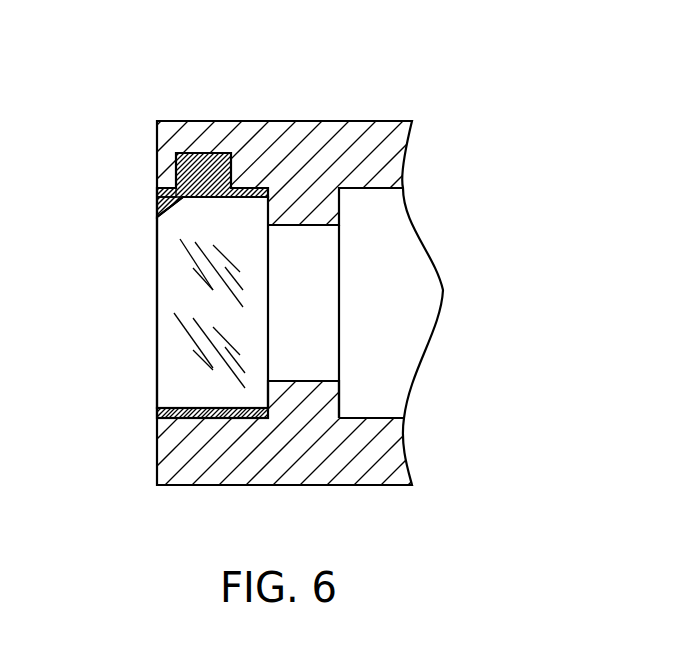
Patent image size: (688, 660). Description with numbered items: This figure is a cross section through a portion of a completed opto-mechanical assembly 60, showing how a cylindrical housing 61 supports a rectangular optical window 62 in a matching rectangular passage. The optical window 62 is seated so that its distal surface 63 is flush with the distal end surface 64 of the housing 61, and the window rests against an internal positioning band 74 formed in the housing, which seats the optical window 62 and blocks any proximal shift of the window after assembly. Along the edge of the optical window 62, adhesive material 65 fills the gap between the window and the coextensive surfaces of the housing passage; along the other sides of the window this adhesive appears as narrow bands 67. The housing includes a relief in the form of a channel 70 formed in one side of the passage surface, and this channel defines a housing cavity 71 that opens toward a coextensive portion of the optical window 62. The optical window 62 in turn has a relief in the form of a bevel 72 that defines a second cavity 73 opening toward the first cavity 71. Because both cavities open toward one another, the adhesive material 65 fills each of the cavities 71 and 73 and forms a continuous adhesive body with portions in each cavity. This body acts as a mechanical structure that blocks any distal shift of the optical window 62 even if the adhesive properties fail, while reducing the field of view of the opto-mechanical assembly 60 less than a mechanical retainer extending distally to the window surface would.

The opto-mechanical assembly 60 is at (378, 105).
The housing 61 is at (395, 160).
The optical window 62 is at (157, 358).
The distal surface 63 is at (157, 273).
The distal end surface 64 is at (157, 450).
The adhesive material 65 is at (203, 168).
The narrow bands 67 is at (157, 417).
The channel 70 is at (237, 189).
The housing cavity 71 is at (176, 167).
The bevel 72 is at (172, 214).
The second cavity 73 is at (157, 202).
The internal positioning band 74 is at (320, 395).